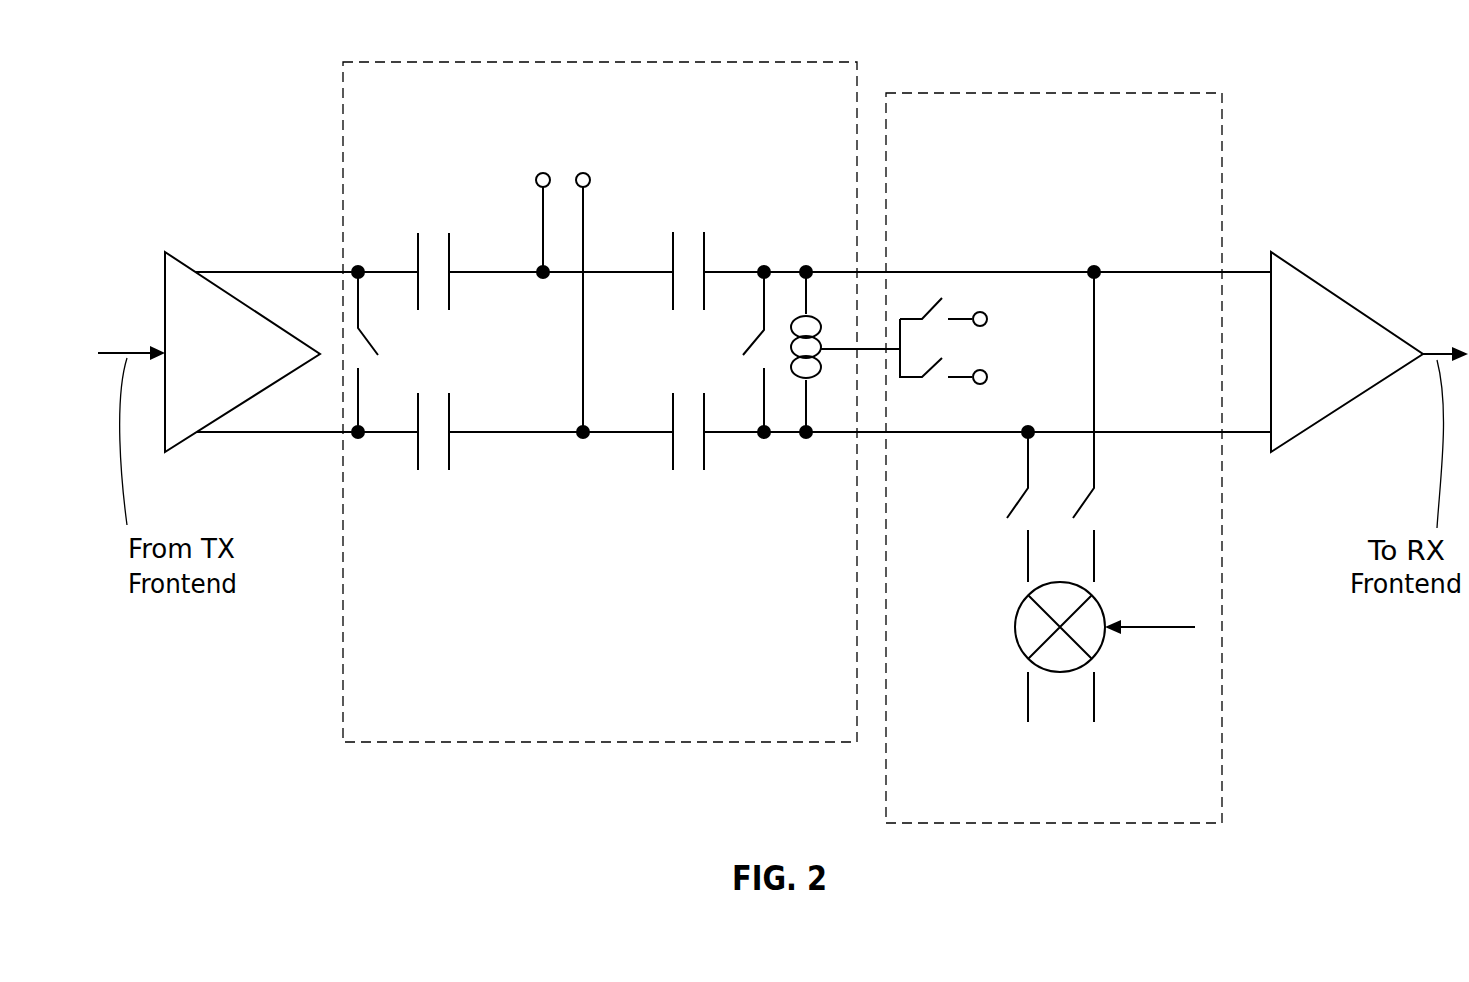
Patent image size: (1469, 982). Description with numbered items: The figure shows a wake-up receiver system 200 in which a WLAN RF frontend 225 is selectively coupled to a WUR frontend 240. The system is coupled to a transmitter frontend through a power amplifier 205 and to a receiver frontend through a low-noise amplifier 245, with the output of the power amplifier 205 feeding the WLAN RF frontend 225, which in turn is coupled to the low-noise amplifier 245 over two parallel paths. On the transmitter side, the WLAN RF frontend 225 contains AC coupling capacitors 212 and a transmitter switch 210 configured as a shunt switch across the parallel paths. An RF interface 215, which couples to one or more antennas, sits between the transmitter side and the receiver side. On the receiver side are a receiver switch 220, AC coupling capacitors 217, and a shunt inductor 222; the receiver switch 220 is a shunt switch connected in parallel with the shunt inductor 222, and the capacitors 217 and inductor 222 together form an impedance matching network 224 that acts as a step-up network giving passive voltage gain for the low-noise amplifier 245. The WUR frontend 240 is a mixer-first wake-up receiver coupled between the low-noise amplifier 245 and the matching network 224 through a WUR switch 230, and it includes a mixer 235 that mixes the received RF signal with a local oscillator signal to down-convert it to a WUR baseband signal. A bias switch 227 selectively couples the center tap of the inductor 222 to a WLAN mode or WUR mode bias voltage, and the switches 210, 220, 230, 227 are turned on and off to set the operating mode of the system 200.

The wake-up receiver (WUR) system 200 is at (181, 86).
The power amplifier (PA) 205 is at (264, 318).
The transmitter switch 210 is at (362, 238).
The AC coupling capacitors 212 is at (451, 292).
The RF interface 215 is at (607, 172).
The AC coupling capacitors 217 is at (672, 290).
The receiver switch 220 is at (777, 238).
The shunt inductor 222 is at (809, 460).
The matching network 224 is at (847, 518).
The WLAN RF frontend 225 is at (768, 733).
The bias switch 227 is at (913, 292).
The WUR switch 230 is at (984, 508).
The mixer 235 is at (1019, 643).
The WUR frontend 240 is at (1190, 136).
The low-noise amplifier (LNA) 245 is at (1320, 285).